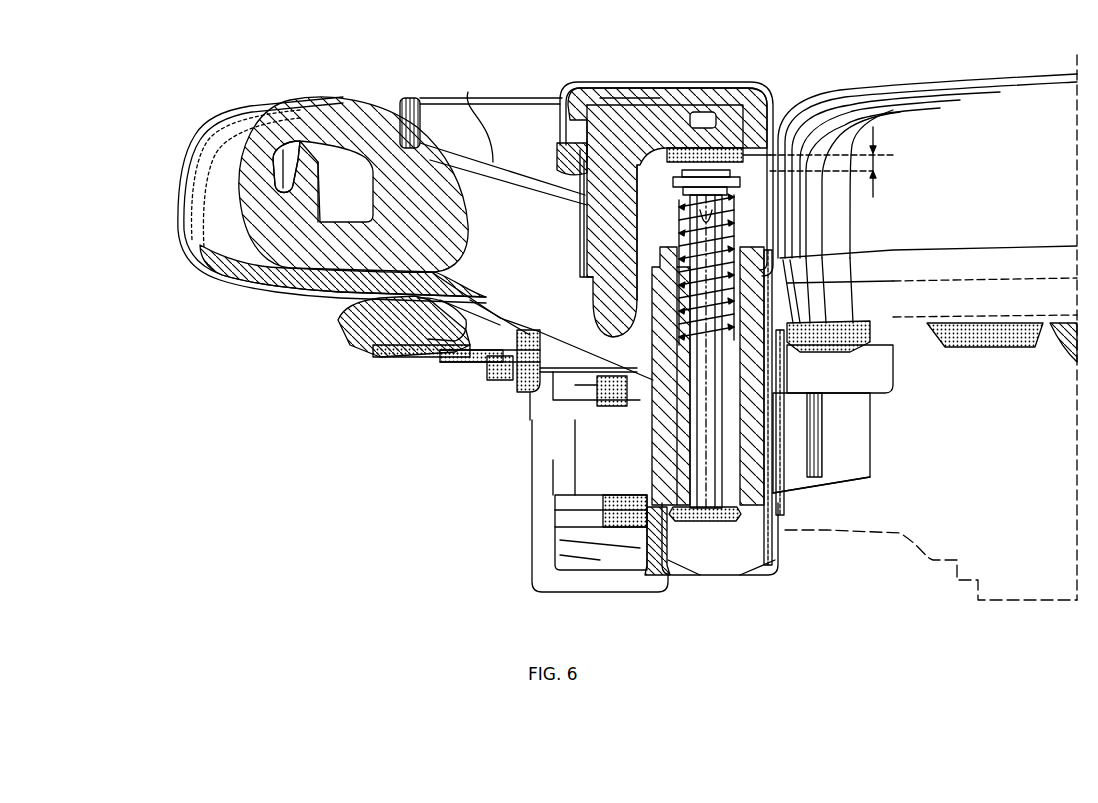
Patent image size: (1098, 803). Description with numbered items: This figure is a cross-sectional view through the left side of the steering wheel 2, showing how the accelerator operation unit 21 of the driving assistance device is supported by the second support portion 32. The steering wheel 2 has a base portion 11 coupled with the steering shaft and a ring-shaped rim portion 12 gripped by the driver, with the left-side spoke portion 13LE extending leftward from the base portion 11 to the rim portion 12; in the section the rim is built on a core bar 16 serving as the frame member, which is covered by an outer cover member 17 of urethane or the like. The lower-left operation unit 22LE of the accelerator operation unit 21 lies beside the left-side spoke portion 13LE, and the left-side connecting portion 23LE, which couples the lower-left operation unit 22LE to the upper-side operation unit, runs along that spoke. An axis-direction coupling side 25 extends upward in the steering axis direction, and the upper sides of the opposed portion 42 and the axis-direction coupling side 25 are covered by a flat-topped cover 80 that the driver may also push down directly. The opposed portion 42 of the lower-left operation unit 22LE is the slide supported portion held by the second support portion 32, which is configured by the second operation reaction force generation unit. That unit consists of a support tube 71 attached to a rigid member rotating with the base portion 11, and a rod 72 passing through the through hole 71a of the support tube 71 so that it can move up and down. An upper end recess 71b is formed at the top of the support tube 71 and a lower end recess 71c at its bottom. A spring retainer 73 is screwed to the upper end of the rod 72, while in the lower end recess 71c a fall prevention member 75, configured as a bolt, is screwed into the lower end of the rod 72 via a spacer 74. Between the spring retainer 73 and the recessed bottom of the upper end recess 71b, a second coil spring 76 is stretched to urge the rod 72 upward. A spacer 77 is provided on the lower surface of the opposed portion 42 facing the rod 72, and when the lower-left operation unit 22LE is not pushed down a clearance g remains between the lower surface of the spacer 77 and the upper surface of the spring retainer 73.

The steering wheel 2 is at (196, 113).
The rim portion 12 is at (249, 107).
The core bar 16 is at (274, 183).
The outer cover member 17 is at (266, 218).
The left-side spoke portion 13LE is at (468, 92).
The lower-left operation unit 22LE is at (594, 103).
The accelerator operation unit 21 is at (617, 97).
The opposed portion 42 is at (642, 103).
The cover 80 is at (688, 81).
The spacer 77 is at (586, 156).
The second coil spring 76 is at (682, 226).
The axis-direction coupling side 25 is at (607, 219).
The spring retainer 73 is at (745, 184).
The clearance g is at (878, 159).
The base portion 11 is at (978, 227).
The left-side connecting portion 23LE is at (347, 339).
The upper end recess 71b is at (647, 377).
The support tube 71 is at (660, 427).
The through hole 71a is at (707, 442).
The lower end recess 71c is at (655, 508).
The rod 72 is at (711, 380).
The second support portion 32 is at (763, 409).
The spacer 74 is at (773, 500).
The fall prevention member 75 is at (704, 522).